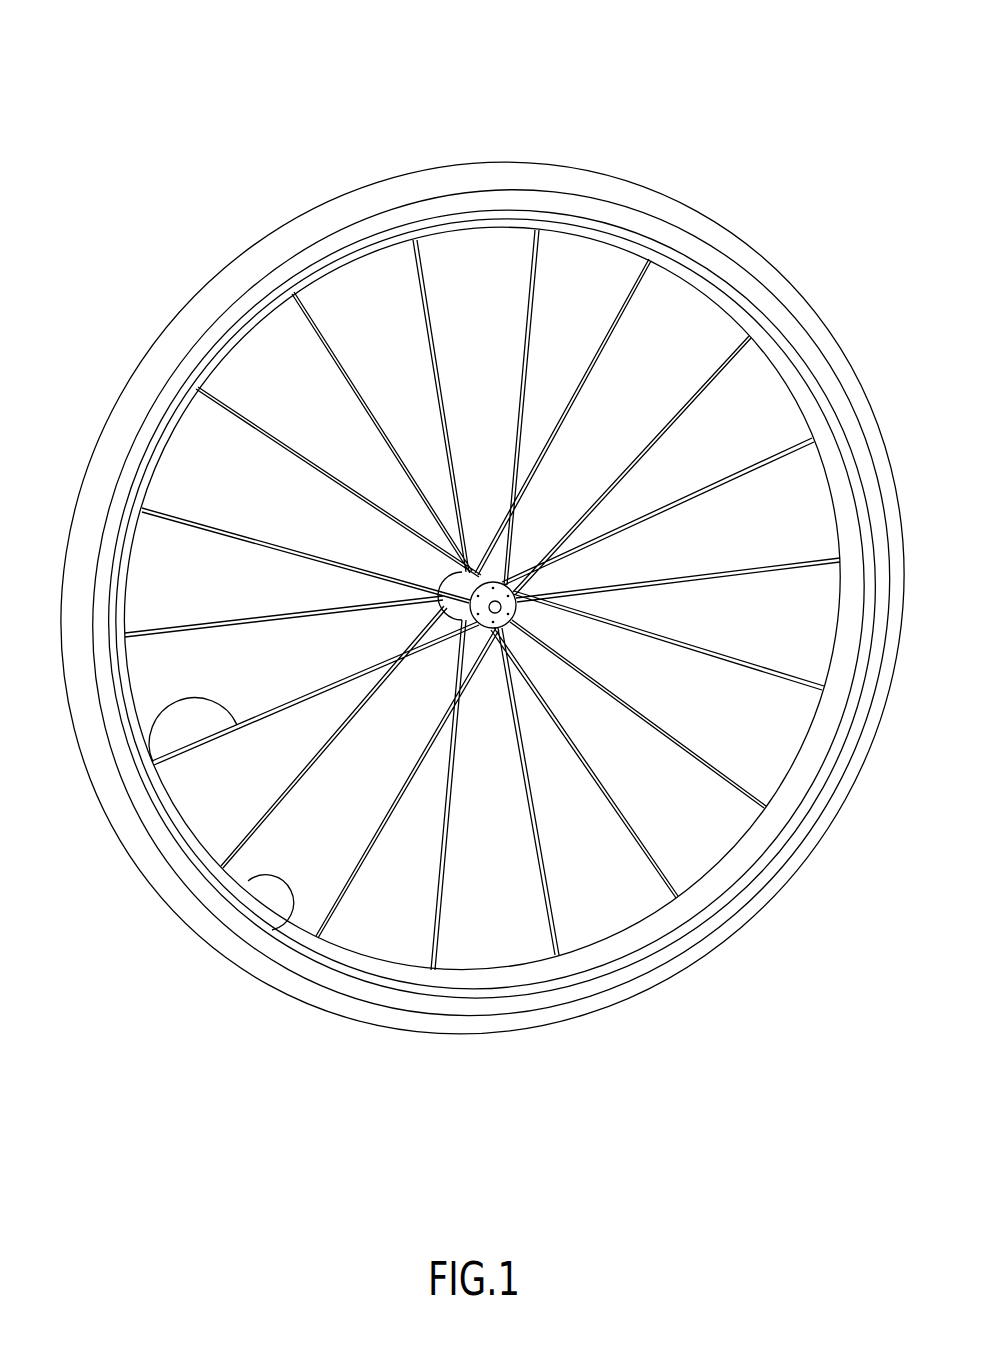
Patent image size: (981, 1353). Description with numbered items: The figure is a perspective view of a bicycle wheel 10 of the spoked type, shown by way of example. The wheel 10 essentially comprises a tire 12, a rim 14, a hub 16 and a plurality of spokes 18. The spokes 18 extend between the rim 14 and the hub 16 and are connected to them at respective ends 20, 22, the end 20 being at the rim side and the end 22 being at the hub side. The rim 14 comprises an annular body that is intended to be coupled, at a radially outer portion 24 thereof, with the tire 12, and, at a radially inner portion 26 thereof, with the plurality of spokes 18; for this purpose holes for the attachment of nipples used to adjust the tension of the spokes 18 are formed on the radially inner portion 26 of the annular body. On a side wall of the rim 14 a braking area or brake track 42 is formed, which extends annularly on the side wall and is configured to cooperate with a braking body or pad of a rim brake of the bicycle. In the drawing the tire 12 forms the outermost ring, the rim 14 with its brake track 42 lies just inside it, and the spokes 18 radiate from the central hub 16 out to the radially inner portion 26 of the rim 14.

The bicycle wheel 10 is at (490, 595).
The tire 12 is at (835, 807).
The rim 14 is at (663, 927).
The hub 16 is at (442, 553).
The spokes 18 is at (153, 762).
The end 20 is at (235, 877).
The end 22 is at (492, 645).
The radially outer portion 24 is at (445, 193).
The radially inner portion 26 is at (330, 267).
The brake track 42 is at (720, 267).